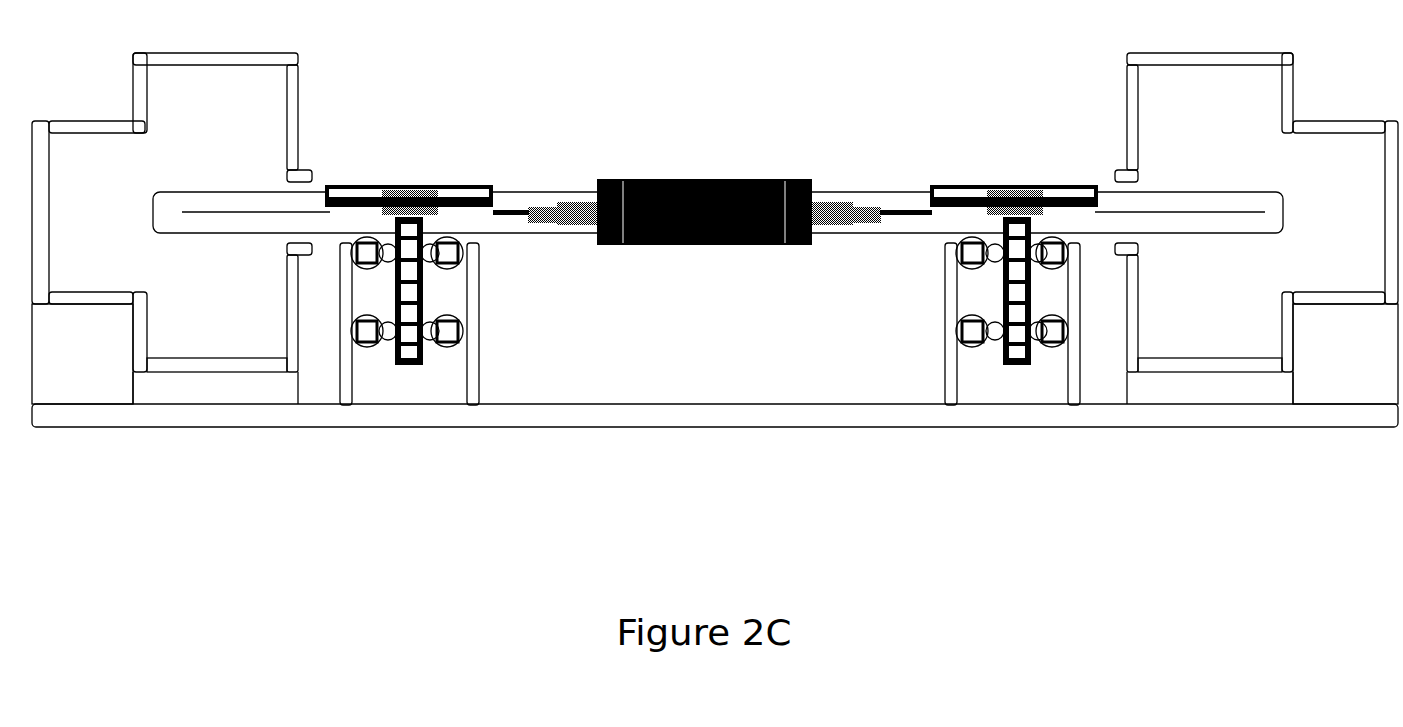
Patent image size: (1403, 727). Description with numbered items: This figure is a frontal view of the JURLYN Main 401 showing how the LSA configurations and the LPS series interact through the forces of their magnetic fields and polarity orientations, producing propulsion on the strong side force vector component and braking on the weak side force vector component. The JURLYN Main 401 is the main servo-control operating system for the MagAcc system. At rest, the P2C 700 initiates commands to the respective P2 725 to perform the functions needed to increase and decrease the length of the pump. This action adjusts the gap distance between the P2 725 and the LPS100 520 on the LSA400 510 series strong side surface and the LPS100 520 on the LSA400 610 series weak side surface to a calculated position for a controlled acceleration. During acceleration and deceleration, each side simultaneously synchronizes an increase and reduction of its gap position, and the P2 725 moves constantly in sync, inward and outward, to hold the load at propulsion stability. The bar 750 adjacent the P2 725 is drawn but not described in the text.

The JURLYN Main-1 401 is at (693, 175).
The P2C 700 is at (578, 198).
The bar / carriage 750 is at (475, 184).
The P2 725 is at (372, 190).
The LSA400 series Strong Side Surface 510 is at (387, 362).
The LPS100 520 is at (360, 264).
The LSA400 series Weak Side Surface 610 is at (428, 367).